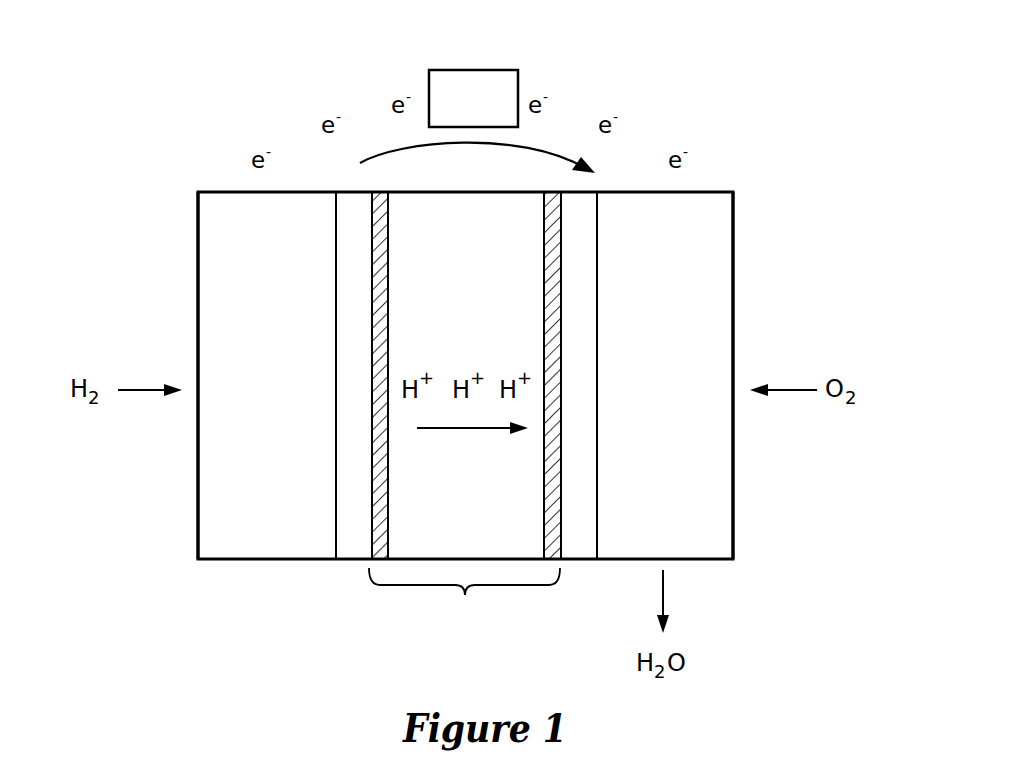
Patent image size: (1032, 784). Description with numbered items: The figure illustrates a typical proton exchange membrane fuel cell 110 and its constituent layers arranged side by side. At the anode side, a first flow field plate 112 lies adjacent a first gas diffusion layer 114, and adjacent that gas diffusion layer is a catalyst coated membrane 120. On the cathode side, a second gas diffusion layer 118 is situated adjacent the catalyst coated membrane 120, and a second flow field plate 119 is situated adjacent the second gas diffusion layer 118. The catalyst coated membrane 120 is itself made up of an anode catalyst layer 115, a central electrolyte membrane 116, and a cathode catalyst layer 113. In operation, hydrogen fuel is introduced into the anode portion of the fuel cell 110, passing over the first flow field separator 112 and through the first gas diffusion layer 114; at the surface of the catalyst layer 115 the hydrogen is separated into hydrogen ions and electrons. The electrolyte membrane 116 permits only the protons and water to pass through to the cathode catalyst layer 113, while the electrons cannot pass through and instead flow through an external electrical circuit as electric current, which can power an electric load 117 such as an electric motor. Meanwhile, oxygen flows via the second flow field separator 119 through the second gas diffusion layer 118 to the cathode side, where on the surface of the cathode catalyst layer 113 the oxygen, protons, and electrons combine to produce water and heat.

The fuel cell 110 is at (770, 98).
The first flow field plate 112 is at (283, 543).
The cathode catalyst layer 113 is at (557, 192).
The first gas diffusion layer 114 is at (351, 560).
The catalyst layer 115 is at (378, 192).
The electrolyte membrane 116 is at (489, 543).
The electric load 117 is at (487, 70).
The second gas diffusion layer 118 is at (577, 562).
The second flow field plate 119 is at (692, 543).
The catalyst coated membrane 120 is at (464, 600).